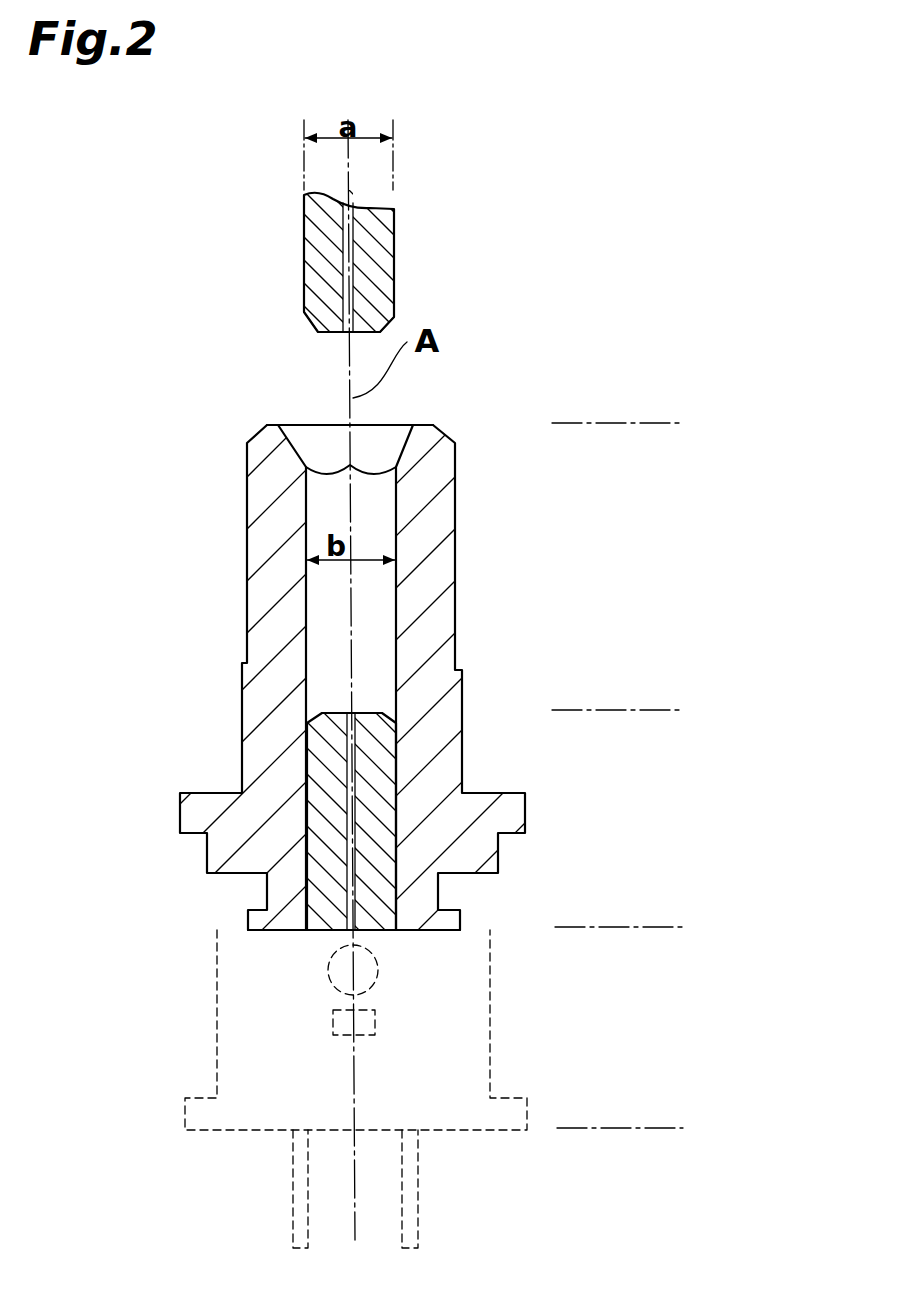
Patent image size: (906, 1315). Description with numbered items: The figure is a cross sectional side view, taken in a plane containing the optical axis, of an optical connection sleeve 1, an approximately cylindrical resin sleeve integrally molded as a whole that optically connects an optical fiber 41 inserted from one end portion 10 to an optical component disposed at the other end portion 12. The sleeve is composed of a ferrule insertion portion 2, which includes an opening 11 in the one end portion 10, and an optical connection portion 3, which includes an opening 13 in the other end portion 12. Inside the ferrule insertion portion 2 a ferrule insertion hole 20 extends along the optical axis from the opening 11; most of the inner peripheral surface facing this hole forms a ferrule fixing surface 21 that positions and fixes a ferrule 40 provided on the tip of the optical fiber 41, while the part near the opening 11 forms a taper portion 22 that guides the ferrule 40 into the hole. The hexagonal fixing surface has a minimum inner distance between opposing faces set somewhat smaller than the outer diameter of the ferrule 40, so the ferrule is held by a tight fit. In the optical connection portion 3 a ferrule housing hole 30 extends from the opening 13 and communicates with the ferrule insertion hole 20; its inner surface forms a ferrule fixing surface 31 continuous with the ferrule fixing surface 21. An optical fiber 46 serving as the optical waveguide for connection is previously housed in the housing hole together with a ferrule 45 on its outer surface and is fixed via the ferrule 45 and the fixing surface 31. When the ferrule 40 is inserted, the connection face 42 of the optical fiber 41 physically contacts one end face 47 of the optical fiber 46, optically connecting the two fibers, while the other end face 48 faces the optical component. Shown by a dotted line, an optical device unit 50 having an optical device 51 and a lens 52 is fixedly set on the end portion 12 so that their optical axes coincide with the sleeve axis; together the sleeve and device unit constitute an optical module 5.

The optical connection sleeve 1 is at (737, 543).
The ferrule insertion portion 2 is at (683, 423).
The optical connection portion 3 is at (683, 710).
The optical module 5 is at (800, 663).
The one end portion 10 is at (216, 423).
The opening 11 is at (308, 425).
The other end portion 12 is at (203, 912).
The opening 13 is at (327, 933).
The ferrule insertion hole 20 is at (382, 409).
The ferrule fixing surface 21 is at (373, 595).
The taper portion 22 is at (405, 447).
The ferrule housing hole 30 is at (395, 936).
The ferrule fixing surface 31 is at (405, 760).
The ferrule 40 is at (372, 270).
The optical fiber 41 is at (347, 252).
The connection face 42 is at (345, 340).
The ferrule 45 is at (382, 897).
The optical fiber 46 is at (343, 777).
The one end face 47 is at (348, 712).
The other end face 48 is at (357, 935).
The optical device unit 50 is at (683, 927).
The optical device 51 is at (342, 1035).
The lens 52 is at (327, 982).